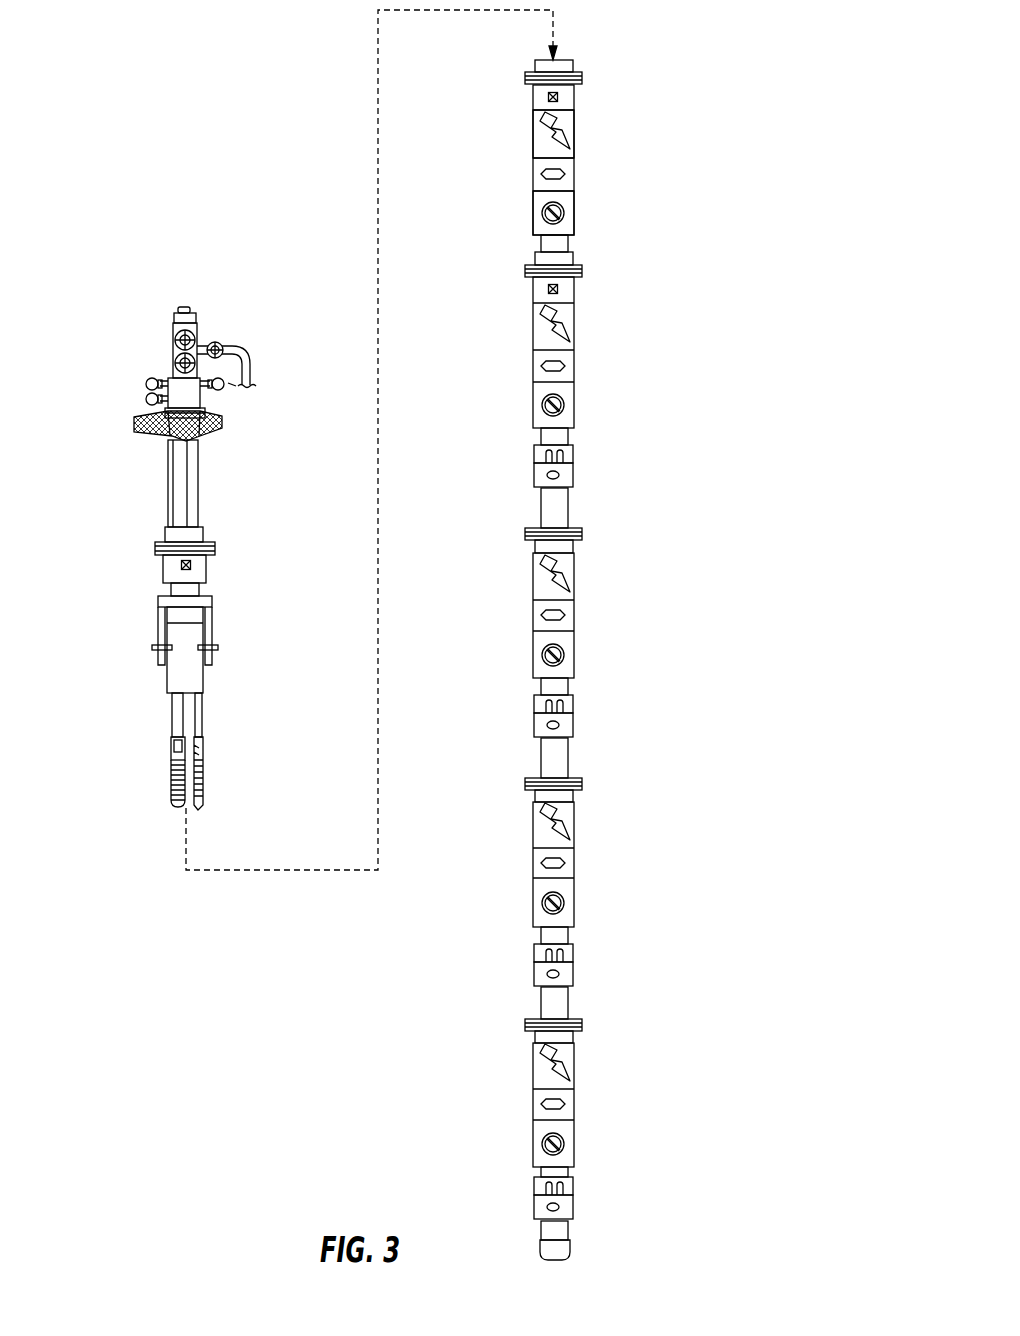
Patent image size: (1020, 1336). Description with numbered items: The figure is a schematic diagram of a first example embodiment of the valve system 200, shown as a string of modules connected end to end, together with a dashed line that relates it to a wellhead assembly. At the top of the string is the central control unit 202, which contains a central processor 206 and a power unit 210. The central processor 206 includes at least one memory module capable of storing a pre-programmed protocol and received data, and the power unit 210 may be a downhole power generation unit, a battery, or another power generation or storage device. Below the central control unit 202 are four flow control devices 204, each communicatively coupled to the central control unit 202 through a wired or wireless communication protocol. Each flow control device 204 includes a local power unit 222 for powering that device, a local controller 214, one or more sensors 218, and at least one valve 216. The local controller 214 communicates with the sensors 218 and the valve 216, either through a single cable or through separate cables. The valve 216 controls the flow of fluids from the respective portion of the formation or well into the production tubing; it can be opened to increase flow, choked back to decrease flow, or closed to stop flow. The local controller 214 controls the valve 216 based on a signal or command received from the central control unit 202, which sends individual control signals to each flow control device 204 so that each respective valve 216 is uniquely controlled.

The valve system 200 is at (148, 124).
The central control unit 202 is at (520, 60).
The flow control device 204 is at (550, 762).
The central processor 206 is at (574, 213).
The power unit 210 is at (574, 158).
The local controller 214 is at (574, 405).
The valve 216 is at (573, 481).
The sensor 218 is at (573, 455).
The local power unit 222 is at (574, 350).